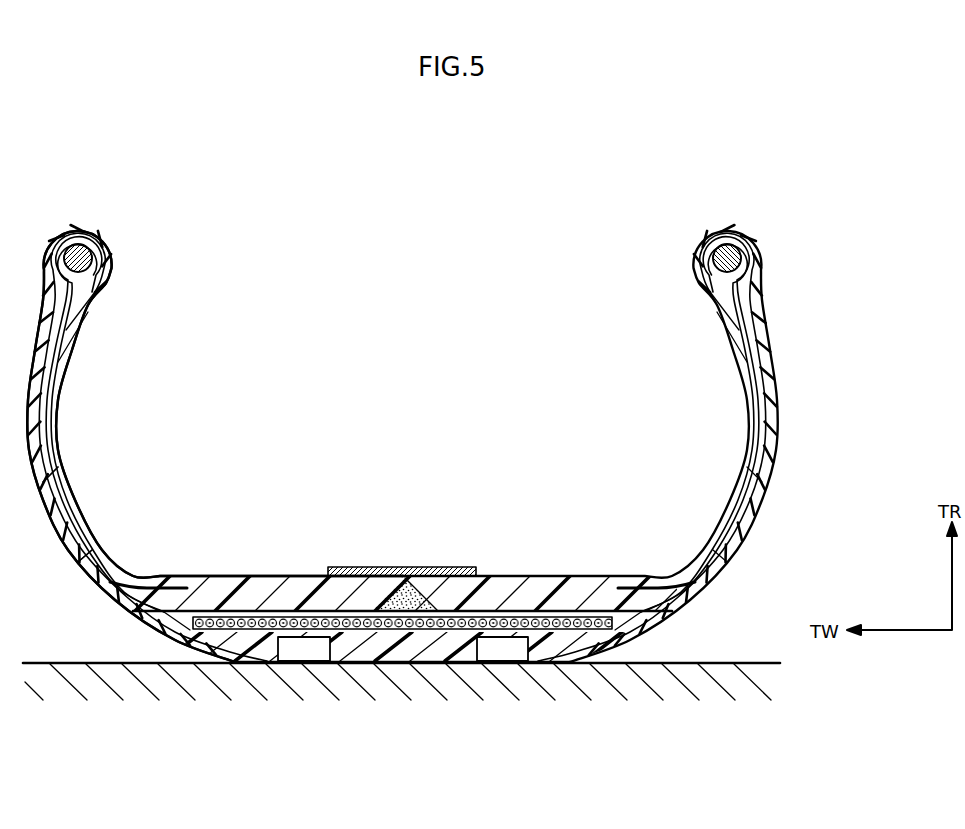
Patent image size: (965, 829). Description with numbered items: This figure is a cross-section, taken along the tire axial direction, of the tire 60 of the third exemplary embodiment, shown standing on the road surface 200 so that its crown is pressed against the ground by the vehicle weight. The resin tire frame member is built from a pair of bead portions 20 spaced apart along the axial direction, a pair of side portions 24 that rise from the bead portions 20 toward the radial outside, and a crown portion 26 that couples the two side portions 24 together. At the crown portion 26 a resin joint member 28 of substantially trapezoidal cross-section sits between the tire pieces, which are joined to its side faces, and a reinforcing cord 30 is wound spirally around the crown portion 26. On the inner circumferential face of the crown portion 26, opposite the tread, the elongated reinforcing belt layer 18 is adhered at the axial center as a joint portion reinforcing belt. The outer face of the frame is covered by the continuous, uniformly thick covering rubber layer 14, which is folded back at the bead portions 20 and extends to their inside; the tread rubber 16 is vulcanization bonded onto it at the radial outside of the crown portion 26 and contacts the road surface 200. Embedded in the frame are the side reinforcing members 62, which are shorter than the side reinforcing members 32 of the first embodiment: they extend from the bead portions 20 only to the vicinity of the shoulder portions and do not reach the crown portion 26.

The tire 60 is at (772, 181).
The covering rubber layer 14 is at (737, 561).
The side reinforcing members 62 is at (50, 441).
The side portions 24 is at (63, 385).
The bead portions 20 is at (104, 236).
The side reinforcing members 32 is at (745, 308).
The crown portion 26 is at (281, 576).
The reinforcing belt layer 18 is at (361, 568).
The joint member 28 is at (439, 567).
The reinforcing cord 30 is at (214, 616).
The tread rubber 16 is at (637, 646).
The road surface 200 is at (713, 657).